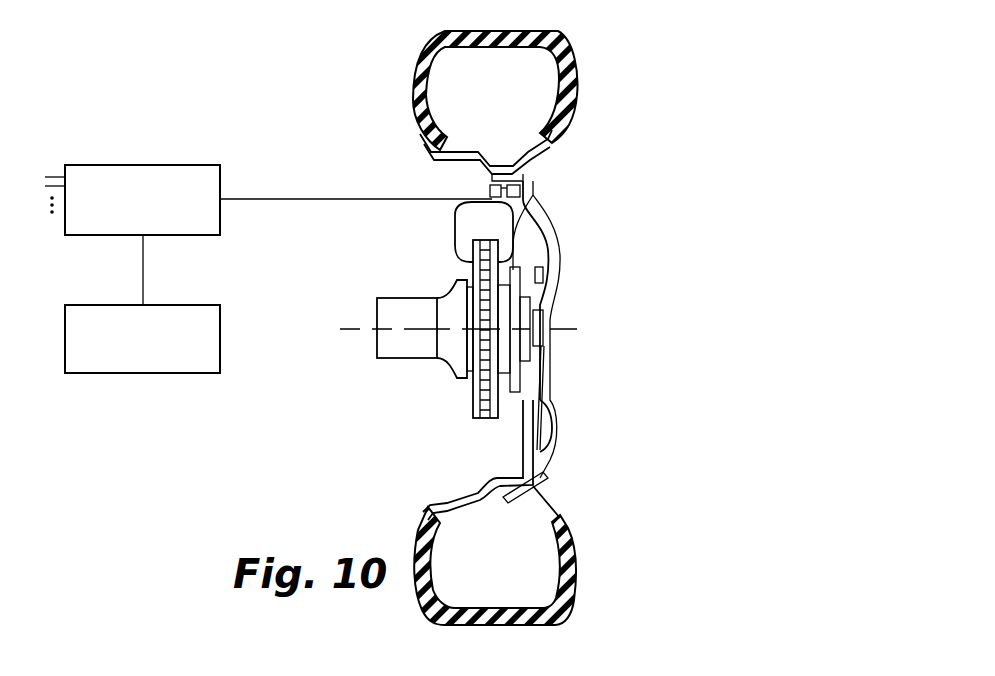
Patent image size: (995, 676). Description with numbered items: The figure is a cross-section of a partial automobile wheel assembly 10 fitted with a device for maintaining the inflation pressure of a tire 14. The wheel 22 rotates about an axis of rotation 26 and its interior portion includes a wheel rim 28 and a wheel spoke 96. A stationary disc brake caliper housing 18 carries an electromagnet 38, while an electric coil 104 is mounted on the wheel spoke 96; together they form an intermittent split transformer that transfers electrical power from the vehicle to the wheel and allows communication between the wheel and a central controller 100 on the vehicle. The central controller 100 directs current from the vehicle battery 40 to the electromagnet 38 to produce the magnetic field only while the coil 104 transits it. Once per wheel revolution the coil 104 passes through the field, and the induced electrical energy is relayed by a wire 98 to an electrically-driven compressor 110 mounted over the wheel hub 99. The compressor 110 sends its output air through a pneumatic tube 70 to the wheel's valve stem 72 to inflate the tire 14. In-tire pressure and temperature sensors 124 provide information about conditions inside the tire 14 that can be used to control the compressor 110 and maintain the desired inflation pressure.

The wheel assembly 10 is at (632, 145).
The tire 14 is at (575, 88).
The disc brake caliper housing 18 is at (455, 238).
The wheel 22 is at (548, 224).
The axis of rotation 26 is at (568, 329).
The wheel rim 28 is at (468, 142).
The electromagnet 38 is at (490, 191).
The vehicle battery 40 is at (83, 305).
The pneumatic tube 70 is at (545, 400).
The valve stem 72 is at (553, 488).
The wheel spoke 96 is at (553, 430).
The wire 98 is at (550, 265).
The wheel hub 99 is at (543, 350).
The central controller 100 is at (90, 165).
The electric coil 104 is at (540, 210).
The electrically-driven compressor 110 is at (548, 300).
The in-tire pressure and temperature sensors 124 is at (560, 540).